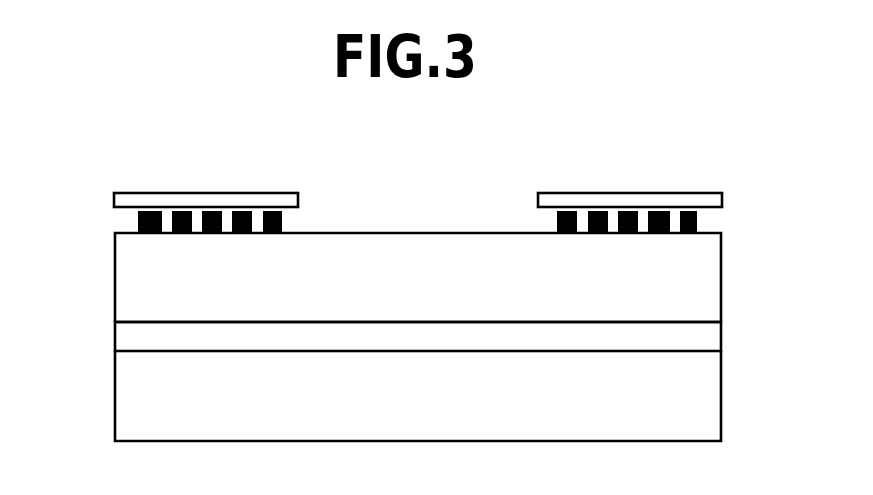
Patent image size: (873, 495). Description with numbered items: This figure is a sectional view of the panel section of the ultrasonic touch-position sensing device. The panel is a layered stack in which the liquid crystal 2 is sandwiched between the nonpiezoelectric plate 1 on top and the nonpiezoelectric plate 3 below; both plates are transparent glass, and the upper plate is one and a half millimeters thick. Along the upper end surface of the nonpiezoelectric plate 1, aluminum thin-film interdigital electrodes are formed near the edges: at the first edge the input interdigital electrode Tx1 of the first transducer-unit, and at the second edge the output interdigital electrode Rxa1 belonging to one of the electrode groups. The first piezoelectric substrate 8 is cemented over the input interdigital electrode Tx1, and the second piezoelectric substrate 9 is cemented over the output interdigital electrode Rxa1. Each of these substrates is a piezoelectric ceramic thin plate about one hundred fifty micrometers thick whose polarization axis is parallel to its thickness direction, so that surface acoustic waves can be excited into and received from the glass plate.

The nonpiezoelectric plate 1 is at (703, 302).
The liquid crystal 2 is at (122, 338).
The nonpiezoelectric plate 3 is at (703, 393).
The first piezoelectric substrate 8 is at (193, 201).
The second piezoelectric substrate 9 is at (645, 203).
The input interdigital electrode Tx1 is at (137, 217).
The output interdigital electrode Rxa1 is at (698, 225).